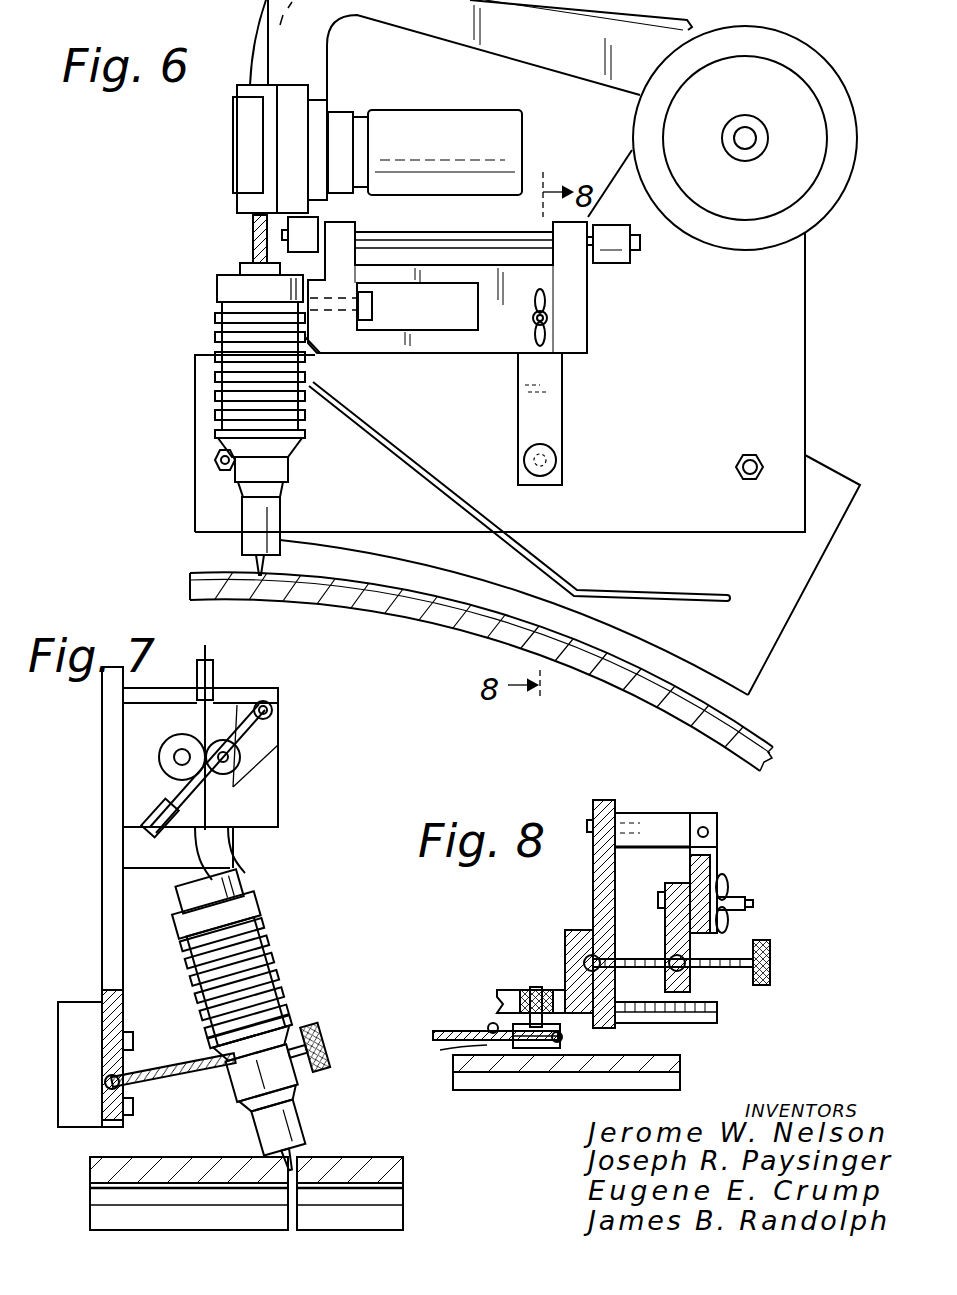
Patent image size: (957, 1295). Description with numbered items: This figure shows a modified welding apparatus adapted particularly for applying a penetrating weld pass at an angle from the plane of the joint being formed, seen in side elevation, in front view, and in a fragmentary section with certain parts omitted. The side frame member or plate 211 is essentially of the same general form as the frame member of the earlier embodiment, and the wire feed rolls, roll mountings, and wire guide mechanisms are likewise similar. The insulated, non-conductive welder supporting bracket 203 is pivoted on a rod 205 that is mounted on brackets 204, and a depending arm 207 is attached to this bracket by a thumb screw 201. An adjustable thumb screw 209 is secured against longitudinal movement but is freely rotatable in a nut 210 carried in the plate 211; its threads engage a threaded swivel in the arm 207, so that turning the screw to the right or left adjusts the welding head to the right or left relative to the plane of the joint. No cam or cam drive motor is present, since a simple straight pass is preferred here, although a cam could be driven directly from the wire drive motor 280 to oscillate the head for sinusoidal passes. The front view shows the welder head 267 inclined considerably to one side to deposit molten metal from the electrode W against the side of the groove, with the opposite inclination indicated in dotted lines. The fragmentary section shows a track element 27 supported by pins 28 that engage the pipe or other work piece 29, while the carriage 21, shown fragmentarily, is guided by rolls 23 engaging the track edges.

In FIG. 8, the carriage 21 is at (508, 987).
In FIG. 8, the rolls 23 is at (560, 1045).
In FIG. 8, the track element 27 is at (460, 1031).
In FIG. 8, the pins 28 is at (440, 1050).
In FIG. 8, the work piece 29 is at (655, 1060).
In FIG. 6, the thumb screw 201 is at (548, 318).
In FIG. 8, the thumb screw 201 is at (732, 882).
In FIG. 6, the welder supporting bracket 203 is at (440, 343).
In FIG. 8, the welder supporting bracket 203 is at (717, 862).
In FIG. 6, the brackets 204 is at (615, 267).
In FIG. 8, the brackets 204 is at (660, 813).
In FIG. 6, the rod 205 is at (487, 232).
In FIG. 8, the rod 205 is at (708, 830).
In FIG. 6, the depending arm 207 is at (562, 425).
In FIG. 8, the depending arm 207 is at (697, 947).
In FIG. 8, the adjustable thumb screw 209 is at (770, 960).
In FIG. 8, the nut 210 is at (587, 960).
In FIG. 6, the side frame member or plate 211 is at (785, 355).
In FIG. 8, the side frame member or plate 211 is at (602, 890).
In FIG. 7, the welder head 267 is at (300, 1122).
In FIG. 6, the wire drive motor 280 is at (423, 108).
In FIG. 7, the electrode W is at (297, 1153).